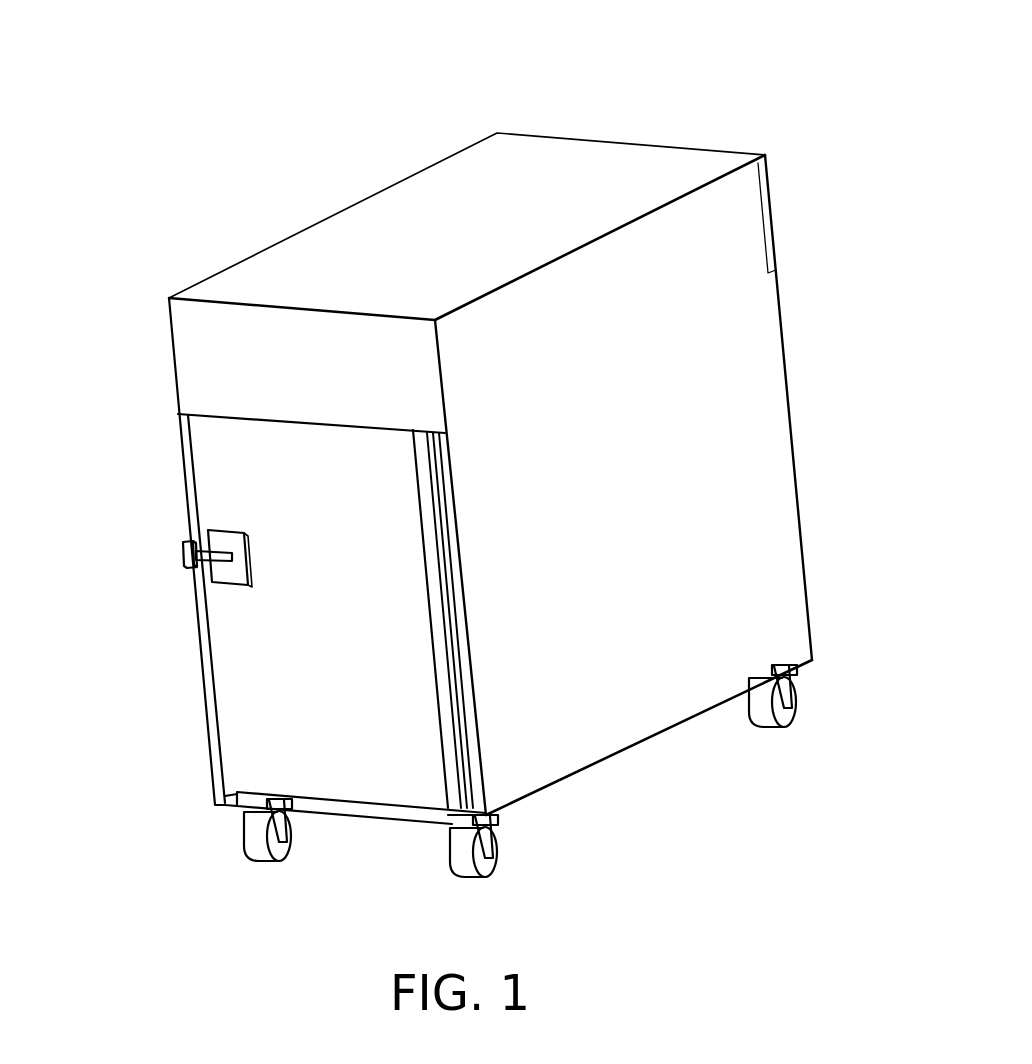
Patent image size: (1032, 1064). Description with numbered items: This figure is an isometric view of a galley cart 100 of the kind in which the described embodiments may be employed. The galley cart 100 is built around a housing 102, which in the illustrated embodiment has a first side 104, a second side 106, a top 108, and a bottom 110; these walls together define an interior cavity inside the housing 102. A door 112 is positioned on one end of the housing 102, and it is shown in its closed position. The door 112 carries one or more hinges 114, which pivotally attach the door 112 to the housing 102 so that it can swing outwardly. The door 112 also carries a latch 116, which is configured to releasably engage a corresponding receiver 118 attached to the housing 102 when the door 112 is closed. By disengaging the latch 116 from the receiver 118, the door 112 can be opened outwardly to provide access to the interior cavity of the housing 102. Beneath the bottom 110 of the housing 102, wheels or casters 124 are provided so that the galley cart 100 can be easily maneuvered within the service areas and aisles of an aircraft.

The galley cart 100 is at (610, 78).
The housing 102 is at (357, 204).
The first side 104 is at (675, 413).
The second side 106 is at (183, 475).
The top 108 is at (468, 205).
The bottom 110 is at (632, 755).
The door 112 is at (305, 655).
The hinge 114 is at (448, 657).
The latch 116 is at (200, 548).
The receiver 118 is at (188, 566).
The caster 124 is at (482, 878).